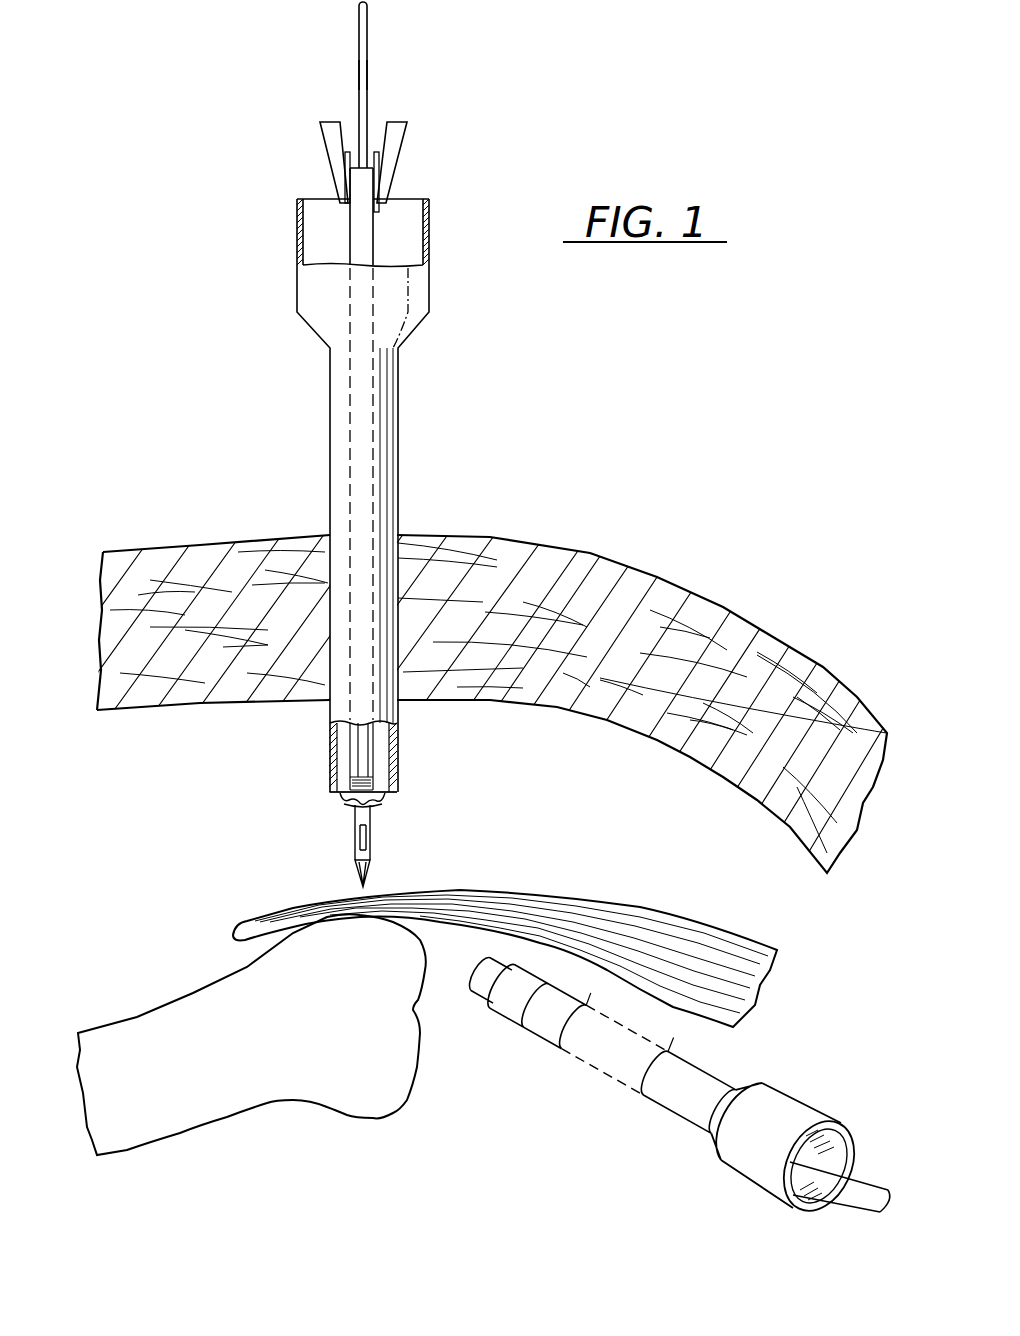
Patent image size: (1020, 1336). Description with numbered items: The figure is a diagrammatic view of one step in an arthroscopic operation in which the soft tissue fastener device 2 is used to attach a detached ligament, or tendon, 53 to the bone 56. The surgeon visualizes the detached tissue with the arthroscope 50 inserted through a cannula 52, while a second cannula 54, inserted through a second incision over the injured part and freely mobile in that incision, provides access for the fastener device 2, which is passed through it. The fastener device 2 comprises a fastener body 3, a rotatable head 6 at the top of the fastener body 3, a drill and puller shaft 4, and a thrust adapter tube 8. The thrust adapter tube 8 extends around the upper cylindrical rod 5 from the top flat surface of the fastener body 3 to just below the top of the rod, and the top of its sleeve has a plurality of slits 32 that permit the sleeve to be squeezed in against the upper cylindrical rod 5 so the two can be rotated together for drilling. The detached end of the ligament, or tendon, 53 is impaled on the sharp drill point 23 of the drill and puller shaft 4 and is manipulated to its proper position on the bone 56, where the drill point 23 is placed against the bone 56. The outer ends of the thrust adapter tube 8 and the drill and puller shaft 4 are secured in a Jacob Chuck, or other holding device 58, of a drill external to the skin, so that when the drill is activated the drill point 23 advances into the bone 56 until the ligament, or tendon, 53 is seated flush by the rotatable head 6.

The fastener device 2 is at (338, 811).
The fastener body 3 is at (355, 833).
The drill and puller shaft 4 is at (368, 50).
The upper cylindrical rod 5 is at (364, 72).
The rotatable head 6 is at (388, 806).
The thrust adapter tube 8 is at (351, 233).
The drill point 23 is at (372, 870).
The slits 32 is at (372, 193).
The arthroscope 50 is at (853, 1172).
The cannula 52 is at (690, 1098).
The ligament, or tendon 53 is at (495, 884).
The cannula 54 is at (398, 440).
The bone 56 is at (185, 1000).
The holding device 58 is at (331, 140).